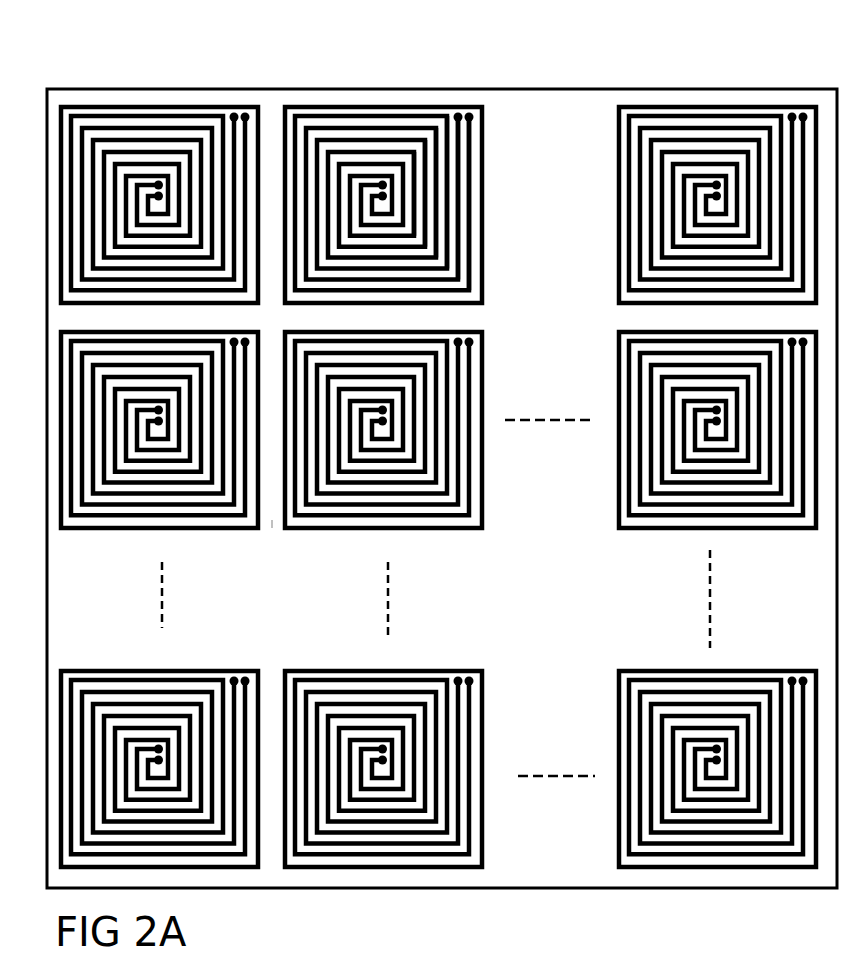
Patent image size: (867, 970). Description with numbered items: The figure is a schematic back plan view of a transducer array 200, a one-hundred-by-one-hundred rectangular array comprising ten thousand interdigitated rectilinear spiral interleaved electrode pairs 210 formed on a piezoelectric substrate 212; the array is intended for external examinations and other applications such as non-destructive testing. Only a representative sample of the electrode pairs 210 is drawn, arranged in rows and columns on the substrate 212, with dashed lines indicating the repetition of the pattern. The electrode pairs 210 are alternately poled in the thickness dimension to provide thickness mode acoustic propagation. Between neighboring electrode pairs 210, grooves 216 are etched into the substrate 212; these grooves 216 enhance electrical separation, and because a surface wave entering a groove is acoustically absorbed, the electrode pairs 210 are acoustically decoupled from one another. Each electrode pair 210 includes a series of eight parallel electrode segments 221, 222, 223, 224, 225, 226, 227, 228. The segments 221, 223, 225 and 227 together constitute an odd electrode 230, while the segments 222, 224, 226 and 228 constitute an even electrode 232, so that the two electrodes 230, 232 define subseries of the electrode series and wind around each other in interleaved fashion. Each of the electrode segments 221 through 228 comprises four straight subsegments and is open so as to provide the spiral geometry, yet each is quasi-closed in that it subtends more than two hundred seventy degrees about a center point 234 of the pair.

The rectangular array 200 is at (160, 75).
The interdigitated rectilinear spiral interleaved electrode pair 210 is at (287, 113).
The piezoelectric substrate 212 is at (621, 618).
The grooves 216 is at (272, 520).
The electrode segment 221 is at (384, 184).
The electrode segment 222 is at (393, 193).
The electrode segment 223 is at (416, 195).
The electrode segment 224 is at (427, 202).
The electrode segment 225 is at (438, 210).
The electrode segment 226 is at (450, 222).
The electrode segment 227 is at (461, 234).
The electrode segment 228 is at (472, 253).
The odd electrode 230 is at (456, 117).
The even electrode 232 is at (467, 117).
The center point 234 is at (383, 207).